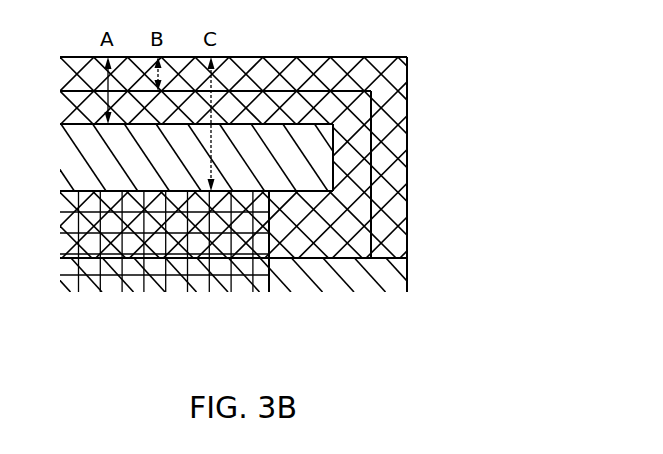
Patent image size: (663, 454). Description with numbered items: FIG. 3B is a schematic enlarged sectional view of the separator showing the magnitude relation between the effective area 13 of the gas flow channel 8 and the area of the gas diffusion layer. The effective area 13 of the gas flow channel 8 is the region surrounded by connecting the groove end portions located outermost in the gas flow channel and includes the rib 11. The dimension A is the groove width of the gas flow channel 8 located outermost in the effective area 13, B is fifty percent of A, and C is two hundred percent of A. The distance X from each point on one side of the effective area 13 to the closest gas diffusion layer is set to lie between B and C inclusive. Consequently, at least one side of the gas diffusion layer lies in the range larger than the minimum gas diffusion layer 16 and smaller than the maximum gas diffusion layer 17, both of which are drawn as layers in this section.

The gas flow channel 8 is at (277, 73).
The effective area of the gas flow channel 13 is at (407, 78).
The maximum gas diffusion layer 17 is at (372, 130).
The rib 11 is at (308, 168).
The minimum gas diffusion layer 16 is at (267, 285).